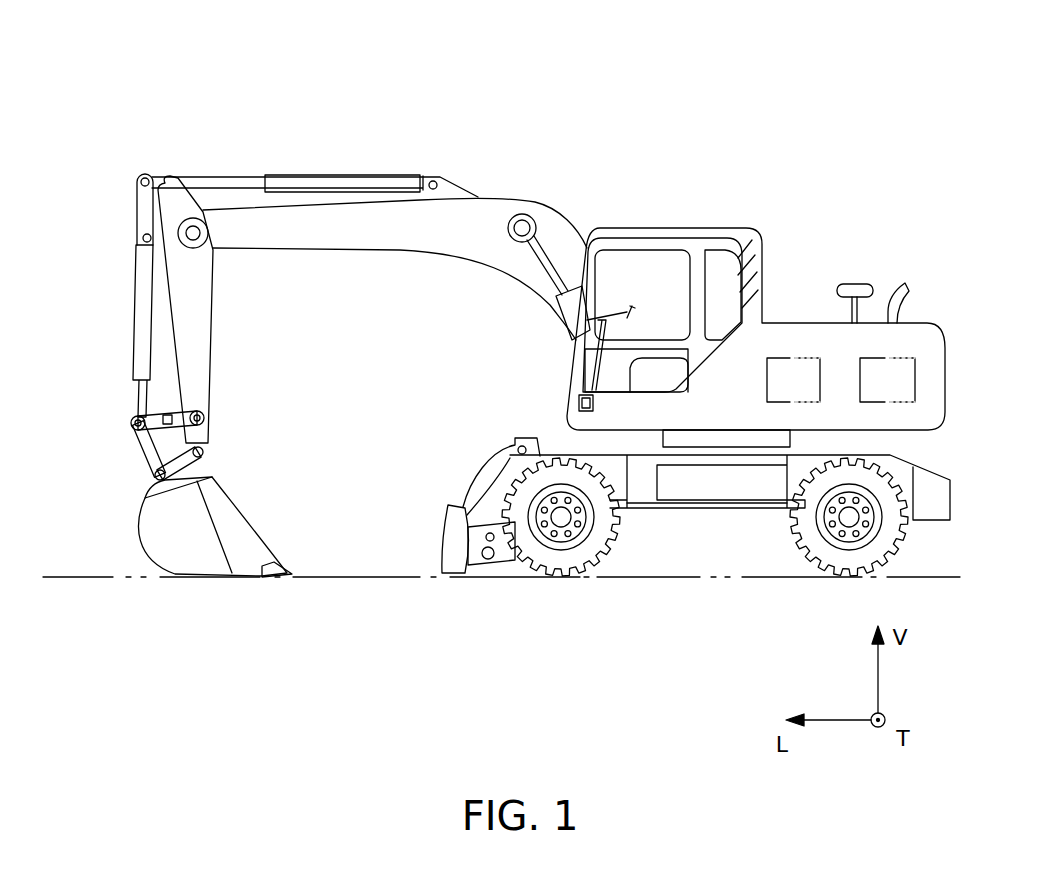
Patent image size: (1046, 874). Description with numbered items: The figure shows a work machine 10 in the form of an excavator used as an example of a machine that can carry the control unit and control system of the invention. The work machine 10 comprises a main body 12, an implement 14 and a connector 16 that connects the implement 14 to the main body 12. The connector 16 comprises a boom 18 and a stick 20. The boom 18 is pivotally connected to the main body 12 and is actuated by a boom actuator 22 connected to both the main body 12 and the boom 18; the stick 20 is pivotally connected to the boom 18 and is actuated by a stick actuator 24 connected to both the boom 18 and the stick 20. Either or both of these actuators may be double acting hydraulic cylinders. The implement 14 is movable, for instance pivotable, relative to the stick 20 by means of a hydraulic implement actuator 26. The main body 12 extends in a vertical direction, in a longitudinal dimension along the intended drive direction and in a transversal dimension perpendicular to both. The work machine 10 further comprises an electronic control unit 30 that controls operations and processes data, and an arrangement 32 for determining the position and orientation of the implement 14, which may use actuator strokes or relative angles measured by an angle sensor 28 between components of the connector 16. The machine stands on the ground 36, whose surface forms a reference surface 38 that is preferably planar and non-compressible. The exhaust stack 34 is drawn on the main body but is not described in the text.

The work machine 10 is at (712, 145).
The main body 12 is at (890, 172).
The implement 14 is at (145, 562).
The connector 16 is at (128, 100).
The boom 18 is at (384, 272).
The stick 20 is at (240, 315).
The boom actuator 22 is at (550, 272).
The stick actuator 24 is at (353, 183).
The implement actuator 26 is at (140, 350).
The sensor 28 is at (165, 413).
The control unit 30 is at (910, 357).
The arrangement for determining the position and orientation of the implement 32 is at (813, 355).
The exhaust stack 34 is at (867, 283).
The ground 36 is at (178, 596).
The reference surface 38 is at (100, 580).